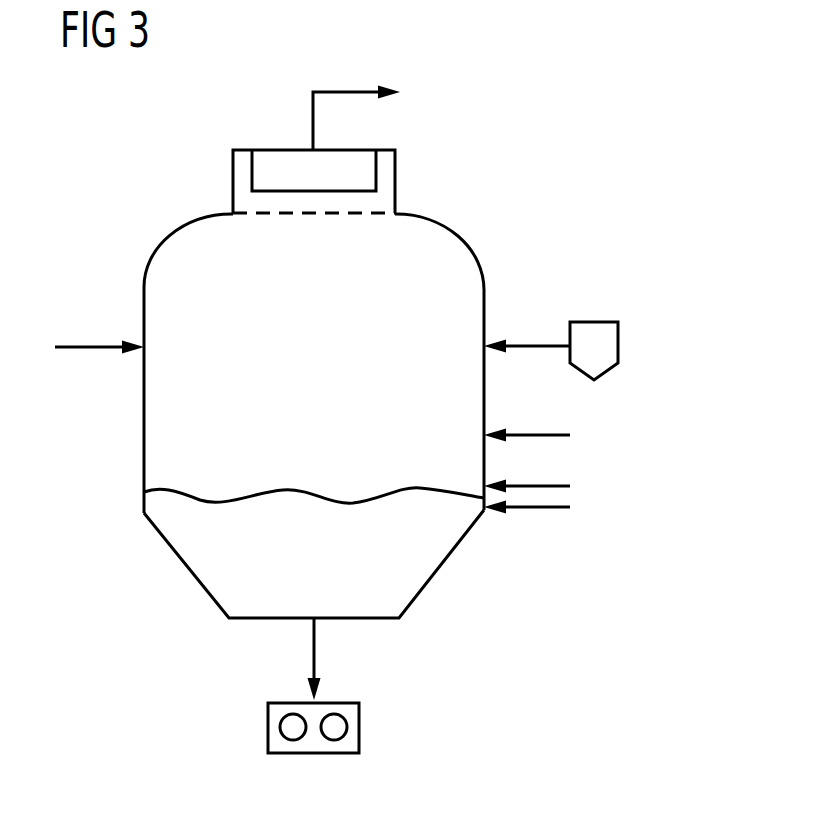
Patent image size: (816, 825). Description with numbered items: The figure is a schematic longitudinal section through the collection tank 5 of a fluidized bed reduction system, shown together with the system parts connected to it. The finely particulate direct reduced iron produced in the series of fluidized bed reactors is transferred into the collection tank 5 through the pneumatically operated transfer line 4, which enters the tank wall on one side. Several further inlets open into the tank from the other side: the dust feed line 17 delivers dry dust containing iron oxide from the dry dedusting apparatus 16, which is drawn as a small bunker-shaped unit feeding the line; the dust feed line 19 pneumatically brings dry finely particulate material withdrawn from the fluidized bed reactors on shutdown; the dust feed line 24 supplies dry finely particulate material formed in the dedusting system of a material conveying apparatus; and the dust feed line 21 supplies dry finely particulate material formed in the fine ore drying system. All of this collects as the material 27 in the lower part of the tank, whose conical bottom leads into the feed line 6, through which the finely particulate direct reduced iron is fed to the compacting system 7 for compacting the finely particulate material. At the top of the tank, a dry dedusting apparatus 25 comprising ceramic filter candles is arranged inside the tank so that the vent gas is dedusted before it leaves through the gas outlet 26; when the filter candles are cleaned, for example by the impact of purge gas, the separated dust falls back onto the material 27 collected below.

The transfer line 4 is at (99, 343).
The collection tank 5 is at (161, 540).
The feed line 6 is at (313, 652).
The compacting system 7 is at (361, 728).
The dry dedusting apparatus 16 is at (594, 322).
The dust feed line 17 is at (529, 345).
The dust feed line 19 is at (527, 433).
The dust feed line 21 is at (565, 511).
The dust feed line 24 is at (565, 483).
The dry dedusting apparatus 25 is at (272, 158).
The gas outlet 26 is at (357, 90).
The material 27 is at (208, 575).